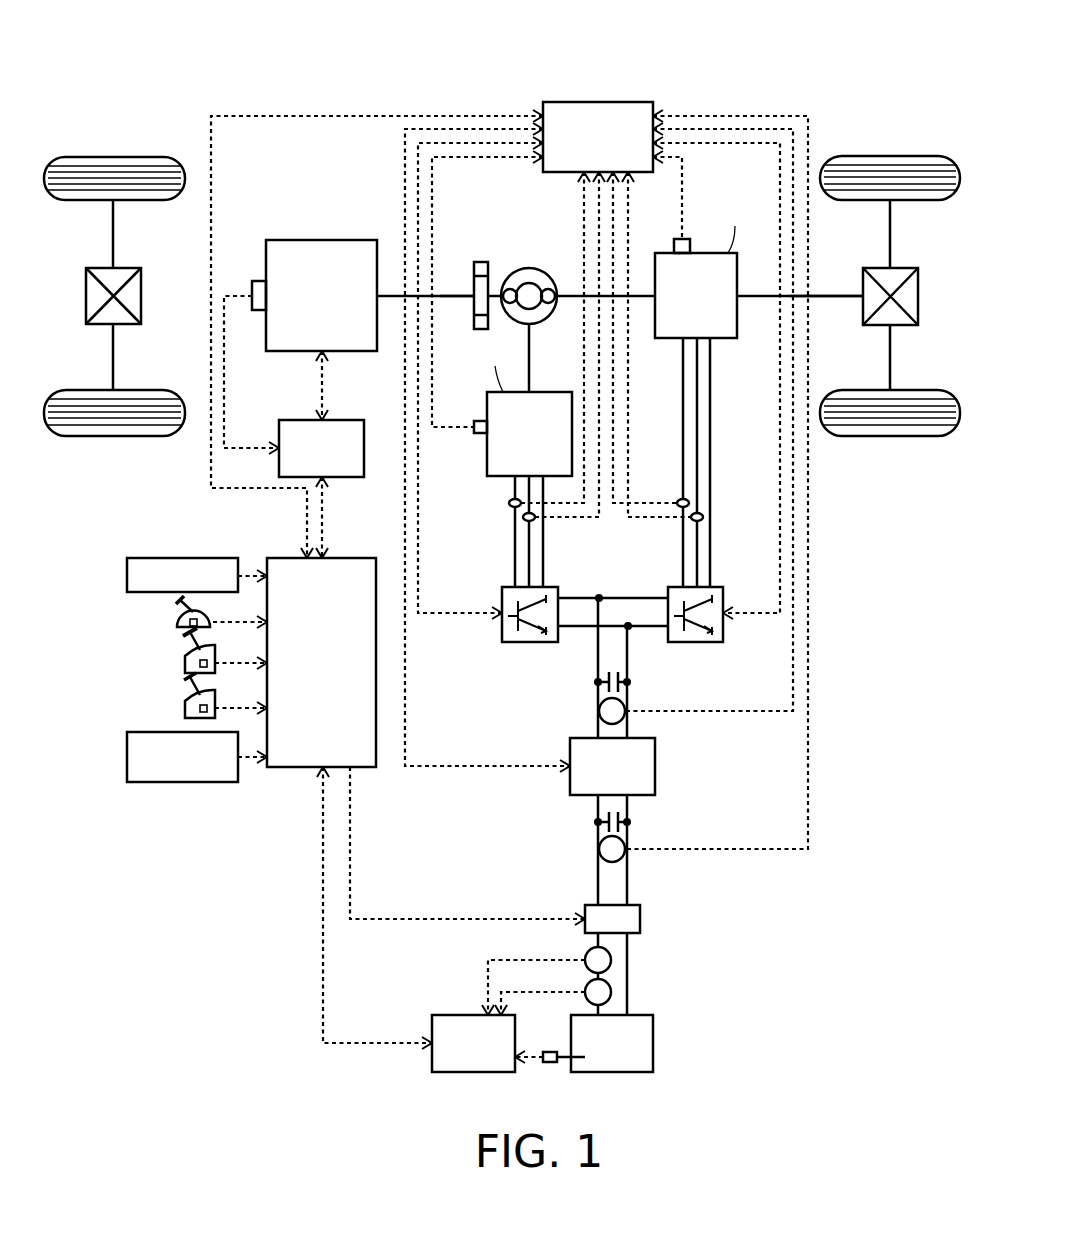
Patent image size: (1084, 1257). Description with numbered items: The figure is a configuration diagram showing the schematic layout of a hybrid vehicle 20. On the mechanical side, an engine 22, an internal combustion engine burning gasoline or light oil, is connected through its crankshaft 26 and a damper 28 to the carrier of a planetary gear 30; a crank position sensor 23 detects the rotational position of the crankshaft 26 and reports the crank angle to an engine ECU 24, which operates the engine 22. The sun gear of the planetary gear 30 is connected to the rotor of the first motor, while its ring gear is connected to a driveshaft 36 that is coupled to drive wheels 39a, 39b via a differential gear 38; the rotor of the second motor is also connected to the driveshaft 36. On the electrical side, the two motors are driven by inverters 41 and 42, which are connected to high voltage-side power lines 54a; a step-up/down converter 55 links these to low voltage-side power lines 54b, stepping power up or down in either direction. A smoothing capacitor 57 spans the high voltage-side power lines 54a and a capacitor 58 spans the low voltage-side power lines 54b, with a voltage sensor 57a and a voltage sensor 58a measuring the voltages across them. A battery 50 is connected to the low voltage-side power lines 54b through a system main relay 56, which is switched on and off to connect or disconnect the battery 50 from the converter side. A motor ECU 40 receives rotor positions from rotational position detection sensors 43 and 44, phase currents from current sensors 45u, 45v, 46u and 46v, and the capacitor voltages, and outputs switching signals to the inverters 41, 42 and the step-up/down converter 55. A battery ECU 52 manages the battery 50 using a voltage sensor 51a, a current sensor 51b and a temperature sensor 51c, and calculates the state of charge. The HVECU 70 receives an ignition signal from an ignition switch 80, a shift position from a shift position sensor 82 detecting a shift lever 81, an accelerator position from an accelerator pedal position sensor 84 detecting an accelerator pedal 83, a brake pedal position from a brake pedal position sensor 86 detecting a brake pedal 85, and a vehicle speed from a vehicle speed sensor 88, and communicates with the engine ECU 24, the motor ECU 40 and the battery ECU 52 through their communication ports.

The hybrid vehicle 20 is at (737, 60).
The engine 22 is at (322, 240).
The crank position sensor 23 is at (258, 281).
The engine ECU 24 is at (348, 420).
The crankshaft 26 is at (453, 292).
The damper 28 is at (480, 262).
The planetary gear 30 is at (529, 268).
The driveshaft 36 is at (827, 293).
The differential gear 38 is at (903, 268).
The drive wheel 39a is at (888, 156).
The drive wheel 39b is at (891, 436).
The motor ECU 40 is at (600, 102).
The inverter 41 is at (553, 587).
The inverter 42 is at (720, 587).
The rotational position detection sensor 43 is at (480, 433).
The rotational position detection sensor 44 is at (686, 239).
The current sensor 45u is at (508, 503).
The current sensor 45v is at (522, 517).
The current sensor 46u is at (690, 503).
The current sensor 46v is at (704, 517).
The battery 50 is at (653, 1043).
The voltage sensor 51a is at (612, 992).
The current sensor 51b is at (612, 960).
The temperature sensor 51c is at (550, 1062).
The battery ECU 52 is at (462, 1015).
The high voltage-side power lines 54a is at (597, 656).
The low voltage-side power lines 54b is at (597, 874).
The step-up/down converter 55 is at (655, 766).
The system main relay 56 is at (640, 919).
The capacitor 57 is at (628, 682).
The voltage sensor 57a is at (598, 711).
The capacitor 58 is at (628, 822).
The voltage sensor 58a is at (598, 849).
The HVECU 70 is at (348, 558).
The ignition switch 80 is at (127, 574).
The shift lever 81 is at (178, 612).
The shift position sensor 82 is at (181, 622).
The accelerator pedal 83 is at (188, 650).
The accelerator pedal position sensor 84 is at (190, 665).
The brake pedal 85 is at (188, 696).
The brake pedal position sensor 86 is at (190, 710).
The vehicle speed sensor 88 is at (127, 757).